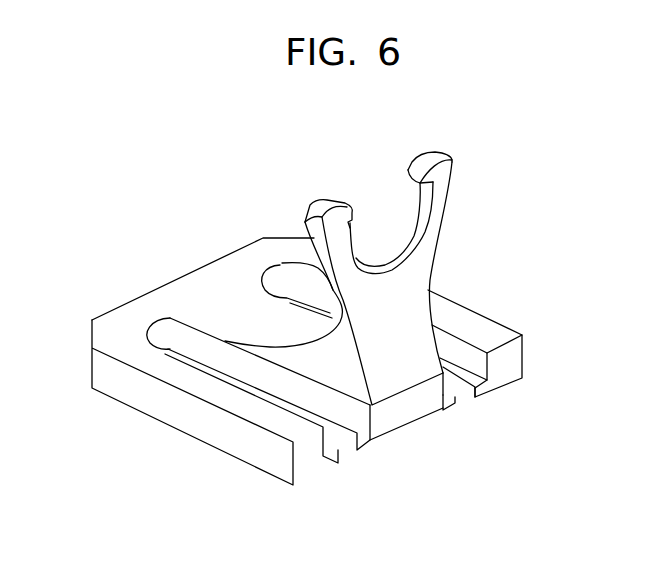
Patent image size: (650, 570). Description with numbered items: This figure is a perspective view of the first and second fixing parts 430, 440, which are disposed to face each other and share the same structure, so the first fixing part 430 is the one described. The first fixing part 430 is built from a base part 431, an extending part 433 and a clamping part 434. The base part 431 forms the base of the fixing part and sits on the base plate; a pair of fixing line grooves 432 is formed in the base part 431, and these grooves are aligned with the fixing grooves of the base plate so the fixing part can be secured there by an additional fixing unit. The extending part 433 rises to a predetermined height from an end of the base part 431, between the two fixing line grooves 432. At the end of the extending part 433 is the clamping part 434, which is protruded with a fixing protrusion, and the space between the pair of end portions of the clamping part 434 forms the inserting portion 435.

The first fixing part 430 is at (304, 288).
The second fixing part 440 is at (527, 160).
The base part 431 is at (107, 334).
The fixing line grooves 432 is at (302, 297).
The extending part 433 is at (400, 363).
The clamping part 434 is at (423, 165).
The inserting portion 435 is at (402, 213).